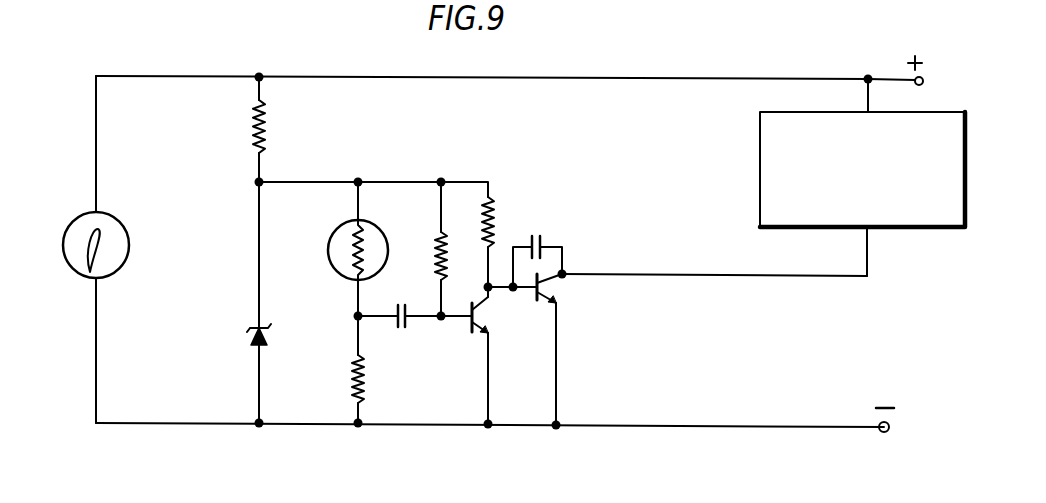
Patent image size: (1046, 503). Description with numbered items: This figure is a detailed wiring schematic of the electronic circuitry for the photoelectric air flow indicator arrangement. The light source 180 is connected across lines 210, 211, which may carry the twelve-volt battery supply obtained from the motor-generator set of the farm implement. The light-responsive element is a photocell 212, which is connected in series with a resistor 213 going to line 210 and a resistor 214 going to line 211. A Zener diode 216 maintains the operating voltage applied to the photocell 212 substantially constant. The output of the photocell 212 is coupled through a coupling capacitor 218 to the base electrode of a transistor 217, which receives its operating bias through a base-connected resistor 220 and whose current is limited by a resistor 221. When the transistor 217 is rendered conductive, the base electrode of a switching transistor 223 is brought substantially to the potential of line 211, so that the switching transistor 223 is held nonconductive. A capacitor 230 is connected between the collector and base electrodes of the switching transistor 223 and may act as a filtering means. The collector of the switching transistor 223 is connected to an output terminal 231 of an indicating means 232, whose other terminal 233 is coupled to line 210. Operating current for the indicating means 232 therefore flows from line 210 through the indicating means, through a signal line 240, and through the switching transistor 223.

The light source 180 is at (127, 262).
The line 210 is at (489, 79).
The line 211 is at (343, 424).
The photocell 212 is at (336, 277).
The resistor 213 is at (267, 124).
The resistor 214 is at (365, 383).
The Zener diode 216 is at (248, 333).
The transistor 217 is at (479, 310).
The coupling capacitor 218 is at (392, 328).
The base-connected resistor 220 is at (434, 254).
The resistor 221 is at (496, 218).
The switching transistor 223 is at (545, 287).
The capacitor 230 is at (541, 237).
The output terminal 231 is at (864, 230).
The indicating means 232 is at (760, 175).
The terminal 233 is at (865, 110).
The signal line 240 is at (688, 276).